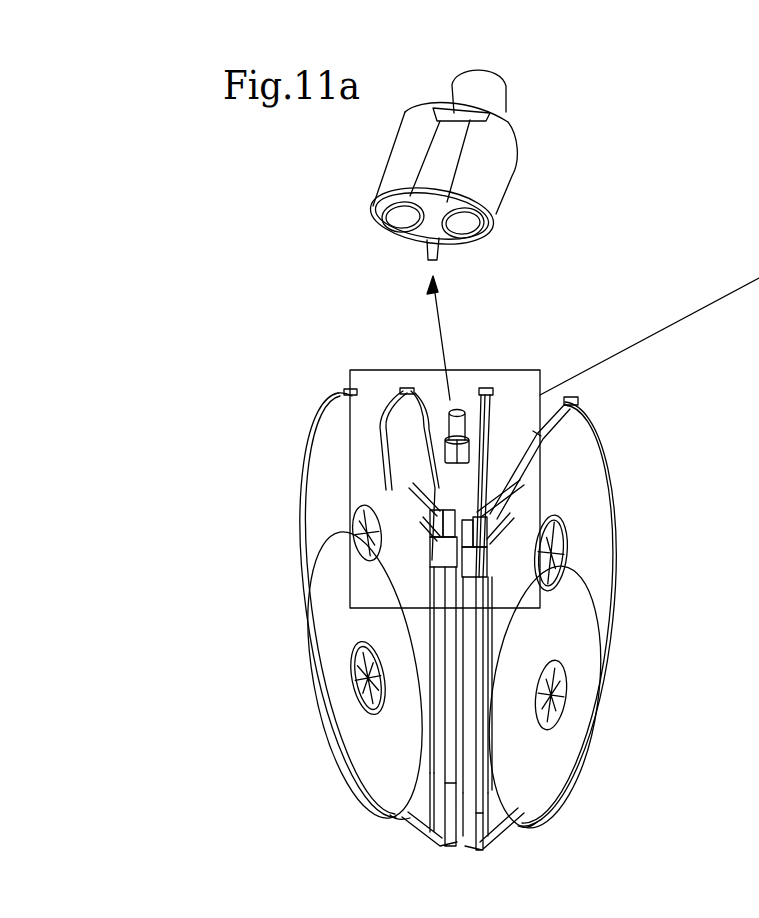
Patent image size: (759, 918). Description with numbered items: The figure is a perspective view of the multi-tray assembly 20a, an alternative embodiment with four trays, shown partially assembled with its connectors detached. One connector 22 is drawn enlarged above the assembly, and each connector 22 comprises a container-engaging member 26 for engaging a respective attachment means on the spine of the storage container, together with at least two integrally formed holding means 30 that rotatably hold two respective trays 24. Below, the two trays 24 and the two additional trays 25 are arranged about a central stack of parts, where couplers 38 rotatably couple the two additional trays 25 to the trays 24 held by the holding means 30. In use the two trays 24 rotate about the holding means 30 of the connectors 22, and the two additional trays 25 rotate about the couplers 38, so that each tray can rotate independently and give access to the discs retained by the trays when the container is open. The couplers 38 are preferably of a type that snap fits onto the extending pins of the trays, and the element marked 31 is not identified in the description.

The multi-tray assembly 20a is at (262, 562).
The connector 22 is at (532, 161).
The tray 24 is at (390, 393).
The additional tray 25 is at (322, 395).
The container-engaging member 26 is at (480, 83).
The holding means 30 is at (403, 217).
The hinge link 31 is at (430, 482).
The coupler 38 is at (443, 560).